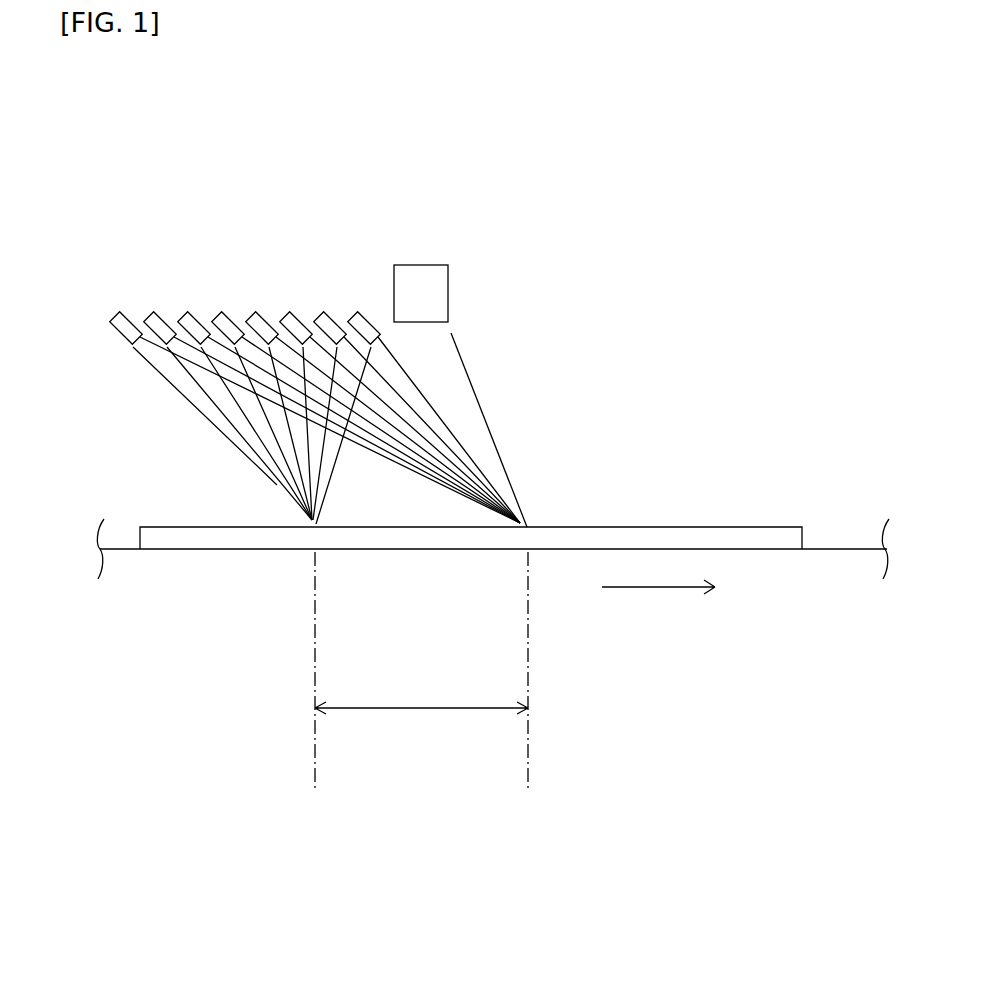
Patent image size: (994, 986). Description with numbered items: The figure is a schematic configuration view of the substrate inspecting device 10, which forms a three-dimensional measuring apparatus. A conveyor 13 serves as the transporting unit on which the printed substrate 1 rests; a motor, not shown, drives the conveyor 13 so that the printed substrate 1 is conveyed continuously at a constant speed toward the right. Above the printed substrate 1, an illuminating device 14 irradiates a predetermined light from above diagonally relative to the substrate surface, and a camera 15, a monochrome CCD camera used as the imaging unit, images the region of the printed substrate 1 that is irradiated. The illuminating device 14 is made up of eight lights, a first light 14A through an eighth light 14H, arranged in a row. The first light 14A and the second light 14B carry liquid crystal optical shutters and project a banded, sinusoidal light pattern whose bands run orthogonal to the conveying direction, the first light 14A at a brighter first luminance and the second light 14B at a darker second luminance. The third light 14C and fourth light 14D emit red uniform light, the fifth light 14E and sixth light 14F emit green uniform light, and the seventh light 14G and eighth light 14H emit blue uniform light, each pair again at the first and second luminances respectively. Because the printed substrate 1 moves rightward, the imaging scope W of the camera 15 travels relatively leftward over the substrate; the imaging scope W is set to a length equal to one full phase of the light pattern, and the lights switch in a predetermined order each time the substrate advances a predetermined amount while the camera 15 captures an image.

The printed substrate 1 is at (698, 527).
The substrate inspecting device 10 is at (703, 302).
The conveyor 13 is at (847, 549).
The illuminating device 14 is at (375, 243).
The first light 14A is at (120, 312).
The second light 14B is at (152, 310).
The third light 14C is at (188, 312).
The fourth light 14D is at (220, 310).
The fifth light 14E is at (256, 312).
The sixth light 14F is at (288, 310).
The seventh light 14G is at (324, 312).
The eighth light 14H is at (356, 310).
The camera 15 is at (424, 265).
The imaging scope W is at (424, 708).